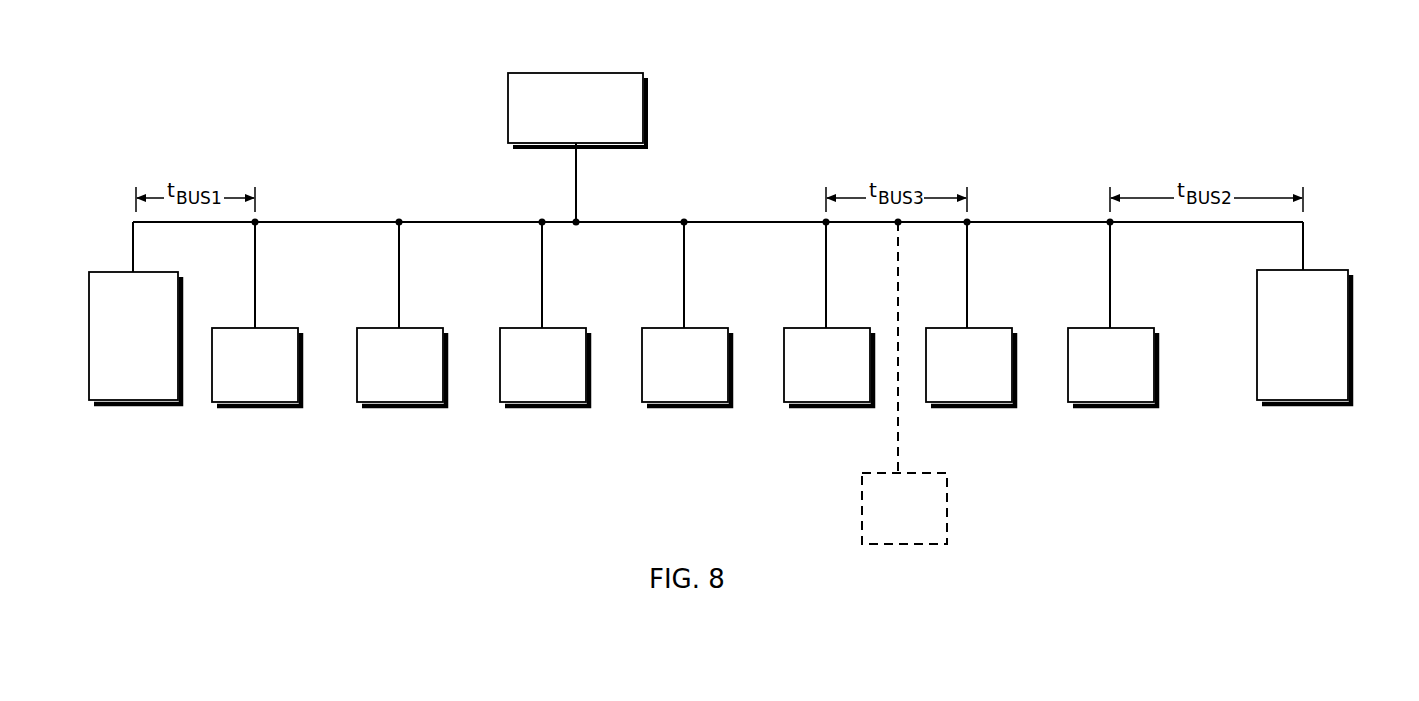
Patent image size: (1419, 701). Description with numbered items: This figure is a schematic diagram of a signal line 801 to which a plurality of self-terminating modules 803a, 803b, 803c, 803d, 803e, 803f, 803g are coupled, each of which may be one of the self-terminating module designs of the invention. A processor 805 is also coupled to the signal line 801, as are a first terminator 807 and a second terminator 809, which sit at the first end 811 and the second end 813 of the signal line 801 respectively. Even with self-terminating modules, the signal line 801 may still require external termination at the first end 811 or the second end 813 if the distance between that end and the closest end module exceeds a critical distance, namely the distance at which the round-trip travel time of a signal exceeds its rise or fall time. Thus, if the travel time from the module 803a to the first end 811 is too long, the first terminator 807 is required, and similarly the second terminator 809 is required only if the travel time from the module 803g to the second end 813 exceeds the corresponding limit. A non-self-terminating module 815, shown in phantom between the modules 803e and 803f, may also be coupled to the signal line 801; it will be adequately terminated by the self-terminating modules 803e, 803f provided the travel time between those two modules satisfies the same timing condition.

The signal line 801 is at (733, 222).
The self-terminating module 803a is at (240, 405).
The self-terminating module 803b is at (378, 405).
The self-terminating module 803c is at (518, 405).
The self-terminating module 803d is at (658, 405).
The self-terminating module 803e is at (800, 405).
The self-terminating module 803f is at (942, 405).
The self-terminating module 803g is at (1084, 405).
The processor 805 is at (615, 73).
The first terminator 807 is at (150, 405).
The second terminator 809 is at (1257, 286).
The first end 811 is at (116, 213).
The second end 813 is at (1334, 218).
The non-self-terminating module 815 is at (947, 507).